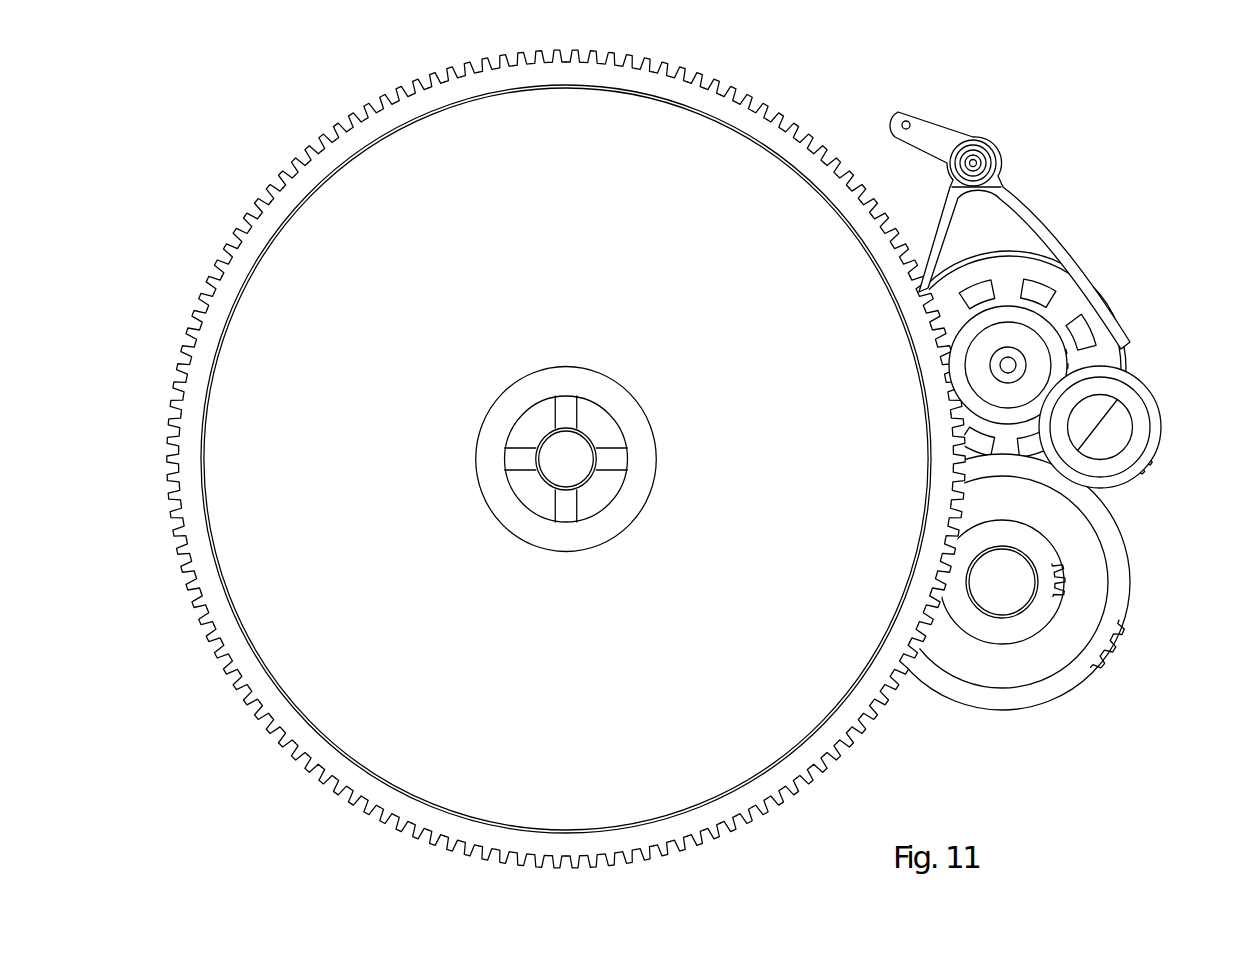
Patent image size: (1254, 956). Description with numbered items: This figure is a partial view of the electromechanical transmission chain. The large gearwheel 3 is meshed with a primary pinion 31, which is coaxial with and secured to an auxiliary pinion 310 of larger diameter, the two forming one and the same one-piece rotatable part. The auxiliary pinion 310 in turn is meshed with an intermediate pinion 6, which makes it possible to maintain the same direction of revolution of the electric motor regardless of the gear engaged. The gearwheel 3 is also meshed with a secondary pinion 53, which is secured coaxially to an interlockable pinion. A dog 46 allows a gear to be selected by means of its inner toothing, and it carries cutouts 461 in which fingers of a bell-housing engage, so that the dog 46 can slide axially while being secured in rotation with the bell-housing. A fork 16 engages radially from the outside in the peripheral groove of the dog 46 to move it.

The gearwheel 3 is at (700, 97).
The fork 16 is at (1005, 197).
The dog 46 is at (1042, 274).
The cutouts 461 is at (1070, 330).
The secondary pinion 53 is at (953, 368).
The intermediate pinion 6 is at (1130, 465).
The auxiliary pinion 310 is at (1112, 628).
The primary pinion 31 is at (1017, 627).